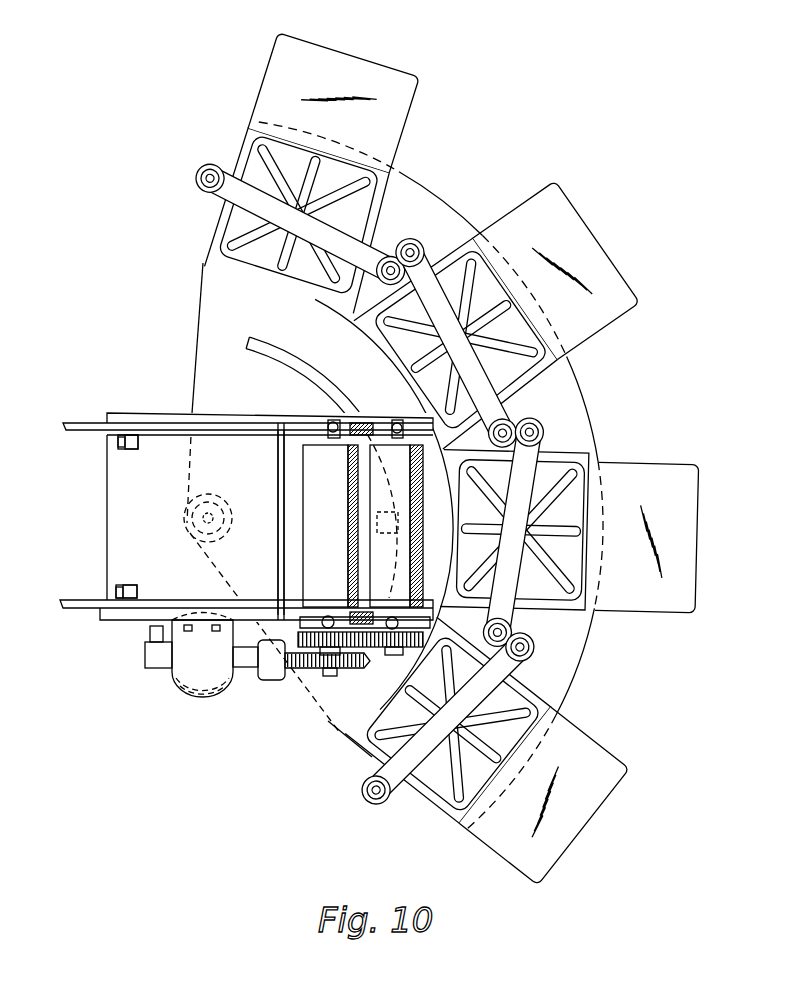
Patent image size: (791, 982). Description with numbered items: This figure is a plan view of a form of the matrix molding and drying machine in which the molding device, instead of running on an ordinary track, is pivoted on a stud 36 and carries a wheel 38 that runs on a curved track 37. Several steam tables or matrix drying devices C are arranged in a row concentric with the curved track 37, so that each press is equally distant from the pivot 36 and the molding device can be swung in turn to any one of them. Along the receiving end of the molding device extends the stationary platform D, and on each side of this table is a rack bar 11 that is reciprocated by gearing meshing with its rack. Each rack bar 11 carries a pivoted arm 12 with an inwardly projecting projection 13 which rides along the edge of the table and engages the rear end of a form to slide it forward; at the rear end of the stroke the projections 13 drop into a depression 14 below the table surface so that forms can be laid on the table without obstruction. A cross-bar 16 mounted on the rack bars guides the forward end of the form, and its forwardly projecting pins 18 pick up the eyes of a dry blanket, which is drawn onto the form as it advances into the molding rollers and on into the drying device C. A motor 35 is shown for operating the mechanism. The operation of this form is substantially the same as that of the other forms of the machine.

The rack bar 11 is at (80, 425).
The pivoted arm 12 is at (128, 437).
The projection 13 is at (118, 442).
The depression 14 is at (129, 449).
The cross-bar 16 is at (285, 495).
The forwardly projecting pins 18 is at (287, 540).
The motor 35 is at (257, 655).
The stud 36 is at (203, 522).
The curved track 37 is at (268, 348).
The wheel 38 is at (385, 518).
The steam table or matrix drying device C is at (410, 178).
The stationary platform D is at (112, 515).